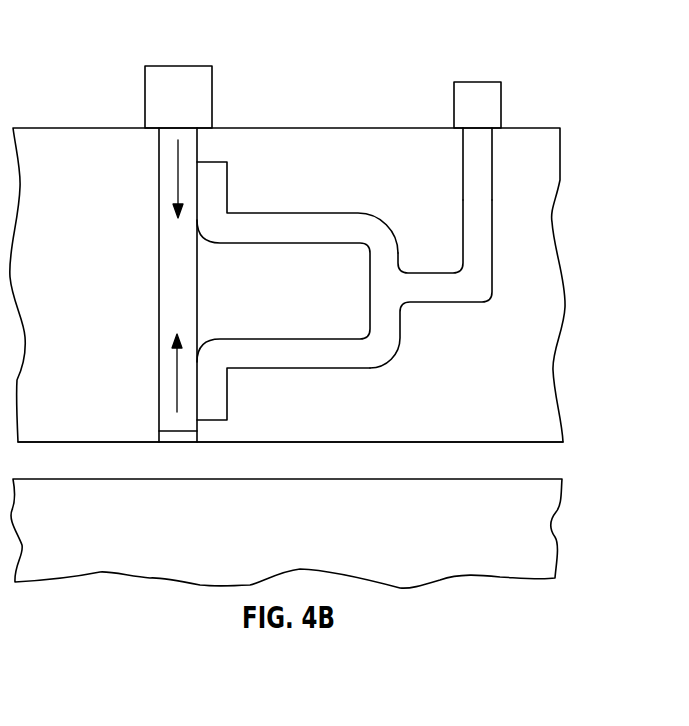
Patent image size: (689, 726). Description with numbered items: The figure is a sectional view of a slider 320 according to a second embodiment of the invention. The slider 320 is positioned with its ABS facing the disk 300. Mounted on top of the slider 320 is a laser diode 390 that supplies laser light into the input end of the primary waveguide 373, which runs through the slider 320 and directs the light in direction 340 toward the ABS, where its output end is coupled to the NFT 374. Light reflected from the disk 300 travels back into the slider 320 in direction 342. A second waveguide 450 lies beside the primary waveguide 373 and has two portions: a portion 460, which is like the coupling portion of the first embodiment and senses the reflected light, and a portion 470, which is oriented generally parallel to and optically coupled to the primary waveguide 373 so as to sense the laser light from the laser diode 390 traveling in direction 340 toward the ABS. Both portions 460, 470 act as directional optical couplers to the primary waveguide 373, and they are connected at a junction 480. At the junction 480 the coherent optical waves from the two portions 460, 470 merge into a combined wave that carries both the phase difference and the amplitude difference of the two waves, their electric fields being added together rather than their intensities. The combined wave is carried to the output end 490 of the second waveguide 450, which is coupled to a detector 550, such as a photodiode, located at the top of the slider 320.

The disk 300 is at (553, 535).
The slider 320 is at (543, 375).
The direction of laser light 340 is at (175, 180).
The direction of reflected light 342 is at (176, 372).
The primary waveguide 373 is at (159, 290).
The NFT 374 is at (177, 437).
The laser diode 390 is at (145, 82).
The second waveguide 450 is at (492, 258).
The portion of second waveguide 460 is at (228, 383).
The portion of second waveguide 470 is at (227, 188).
The junction 480 is at (402, 310).
The output end of second waveguide 490 is at (484, 131).
The detector 550 is at (454, 95).
The air-bearing surface ABS is at (525, 443).